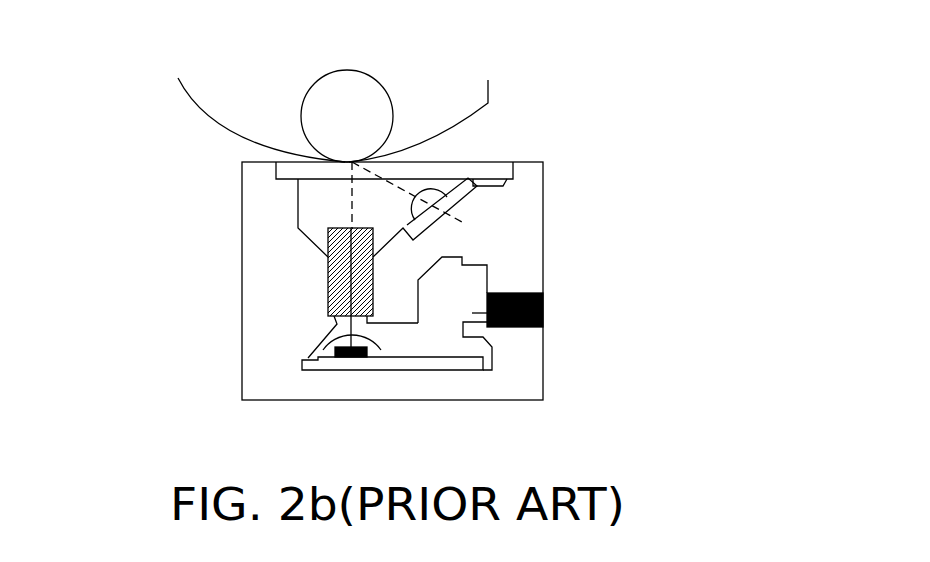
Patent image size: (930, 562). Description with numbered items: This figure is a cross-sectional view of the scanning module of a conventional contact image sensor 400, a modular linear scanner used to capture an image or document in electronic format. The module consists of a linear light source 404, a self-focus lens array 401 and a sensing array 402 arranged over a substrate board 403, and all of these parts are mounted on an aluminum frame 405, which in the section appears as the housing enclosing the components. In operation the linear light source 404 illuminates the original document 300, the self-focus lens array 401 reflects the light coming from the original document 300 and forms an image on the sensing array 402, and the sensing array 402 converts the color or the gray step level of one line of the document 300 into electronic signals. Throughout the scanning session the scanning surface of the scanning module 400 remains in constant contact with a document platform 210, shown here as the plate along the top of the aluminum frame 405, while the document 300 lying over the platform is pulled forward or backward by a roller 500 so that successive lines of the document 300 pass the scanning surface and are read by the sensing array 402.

The roller 500 is at (357, 97).
The original document 300 is at (490, 103).
The document platform 210 is at (453, 170).
The linear light source 404 is at (453, 205).
The self-focus lens array 401 is at (328, 277).
The sensing array 402 is at (327, 350).
The substrate board 403 is at (403, 362).
The aluminum frame 405 is at (503, 400).
The contact image sensor 400 is at (97, 459).